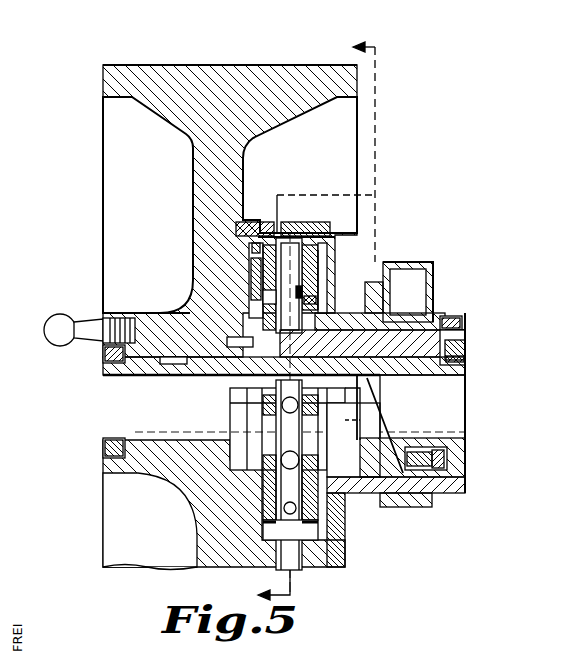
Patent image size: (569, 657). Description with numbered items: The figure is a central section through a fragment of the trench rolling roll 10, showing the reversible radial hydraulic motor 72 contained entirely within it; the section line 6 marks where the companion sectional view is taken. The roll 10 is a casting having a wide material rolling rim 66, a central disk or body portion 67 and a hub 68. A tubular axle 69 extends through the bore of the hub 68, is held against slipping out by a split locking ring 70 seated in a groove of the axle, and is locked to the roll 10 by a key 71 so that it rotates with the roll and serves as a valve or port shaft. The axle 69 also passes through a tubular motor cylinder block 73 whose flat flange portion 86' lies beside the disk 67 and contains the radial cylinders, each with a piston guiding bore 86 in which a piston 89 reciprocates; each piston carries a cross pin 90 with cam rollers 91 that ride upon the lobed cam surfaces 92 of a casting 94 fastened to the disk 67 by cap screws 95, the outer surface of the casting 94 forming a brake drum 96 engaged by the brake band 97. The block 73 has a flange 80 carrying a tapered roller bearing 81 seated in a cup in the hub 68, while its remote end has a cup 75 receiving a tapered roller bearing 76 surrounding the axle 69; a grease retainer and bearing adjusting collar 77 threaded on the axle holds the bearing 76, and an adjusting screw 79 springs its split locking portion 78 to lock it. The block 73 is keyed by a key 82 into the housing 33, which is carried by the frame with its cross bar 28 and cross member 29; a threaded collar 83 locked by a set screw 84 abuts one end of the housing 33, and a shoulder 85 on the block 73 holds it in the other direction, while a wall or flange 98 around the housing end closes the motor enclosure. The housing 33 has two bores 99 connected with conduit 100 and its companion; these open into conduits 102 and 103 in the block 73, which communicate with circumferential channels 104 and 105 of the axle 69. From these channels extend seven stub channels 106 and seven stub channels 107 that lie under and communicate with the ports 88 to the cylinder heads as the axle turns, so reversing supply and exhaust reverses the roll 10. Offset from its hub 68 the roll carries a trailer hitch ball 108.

The roll 10 is at (103, 210).
The material rolling rim 66 is at (112, 72).
The central disk or body portion 67 is at (200, 172).
The conduit 103 is at (175, 312).
The section line 6 is at (308, 321).
The casting 94 is at (312, 275).
The piston guiding bore 86 is at (227, 412).
The cap screws 95 is at (262, 226).
The brake band 97 is at (305, 224).
The brake drum 96 is at (320, 258).
The cam surfaces 92 is at (258, 240).
The cross pin or head 90 is at (253, 272).
The piston 89 is at (270, 297).
The antifriction bearing or cam roller 91 is at (298, 292).
The radial type hydraulic motor 72 is at (318, 300).
The bores 99 is at (392, 298).
The cross member 29 is at (436, 272).
The conduit 100 is at (368, 282).
The housing 33 is at (443, 318).
The tubular motor cylinder block 73 is at (467, 338).
The collar 83 is at (450, 323).
The set screw 84 is at (466, 330).
The locking portion 78 is at (467, 352).
The adjusting screw 79 is at (468, 364).
The tubular axle 69 is at (468, 374).
The key 71 is at (172, 368).
The ball 108 is at (44, 328).
The hub 68 is at (150, 477).
The split locking member or ring 70 is at (105, 452).
The tapered roller bearing 81 is at (243, 462).
The flange 80 is at (232, 432).
The port 88 is at (245, 370).
The stub channels 107 is at (265, 390).
The circumferential groove or channel 105 is at (245, 405).
The wall or flange 98 is at (333, 528).
The flange portion 86' is at (345, 557).
The shoulder 85 is at (365, 426).
The grease retainer and bearing adjusting collar 77 is at (466, 458).
The bore or cup 75 is at (416, 449).
The tapered roller bearing 76 is at (438, 446).
The key 82 is at (447, 491).
The cross bar 28 is at (410, 507).
The conduit 102 is at (440, 387).
The stub channels 106 is at (362, 394).
The circumferential groove or channel 104 is at (365, 408).